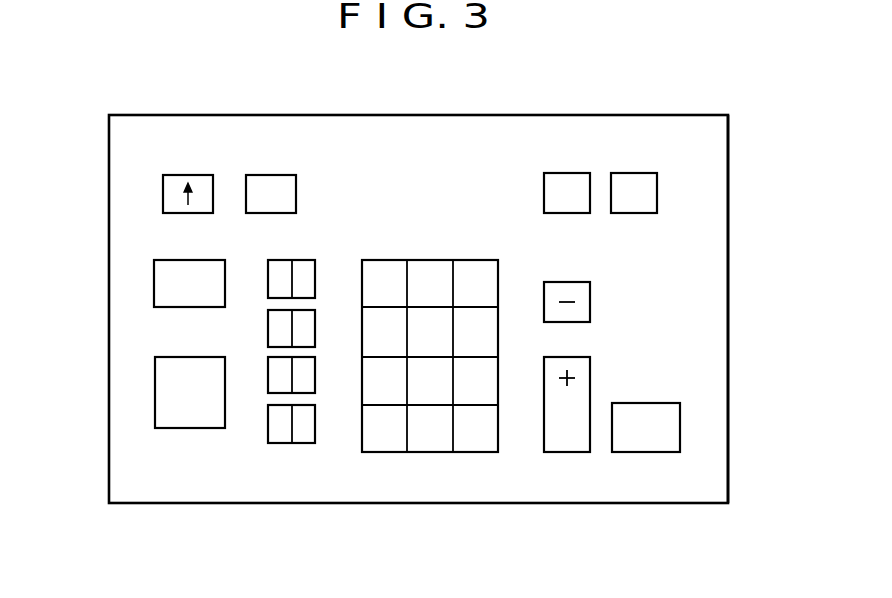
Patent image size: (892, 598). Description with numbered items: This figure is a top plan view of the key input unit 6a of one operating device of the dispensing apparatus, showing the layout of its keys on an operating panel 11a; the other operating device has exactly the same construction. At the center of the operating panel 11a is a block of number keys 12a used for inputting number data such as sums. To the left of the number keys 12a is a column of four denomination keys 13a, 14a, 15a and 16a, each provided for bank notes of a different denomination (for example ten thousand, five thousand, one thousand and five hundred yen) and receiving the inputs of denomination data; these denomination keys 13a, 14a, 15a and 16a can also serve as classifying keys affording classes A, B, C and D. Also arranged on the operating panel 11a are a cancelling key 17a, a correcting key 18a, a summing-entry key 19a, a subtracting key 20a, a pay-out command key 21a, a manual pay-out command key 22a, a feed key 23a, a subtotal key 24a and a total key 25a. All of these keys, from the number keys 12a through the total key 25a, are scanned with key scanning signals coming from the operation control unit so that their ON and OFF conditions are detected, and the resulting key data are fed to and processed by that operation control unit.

The key input unit 6a is at (702, 288).
The operating panel 11a is at (465, 490).
The number keys 12a is at (432, 258).
The denomination key 13a is at (283, 260).
The denomination key 14a is at (248, 318).
The denomination key 15a is at (300, 395).
The denomination key 16a is at (298, 443).
The cancelling key 17a is at (165, 263).
The correcting key 18a is at (158, 400).
The summing-entry key 19a is at (555, 448).
The subtracting key 20a is at (565, 283).
The pay-out command key 21a is at (627, 410).
The manual pay-out command key 22a is at (273, 177).
The feed key 23a is at (172, 175).
The subtotal key 24a is at (547, 186).
The total key 25a is at (622, 175).